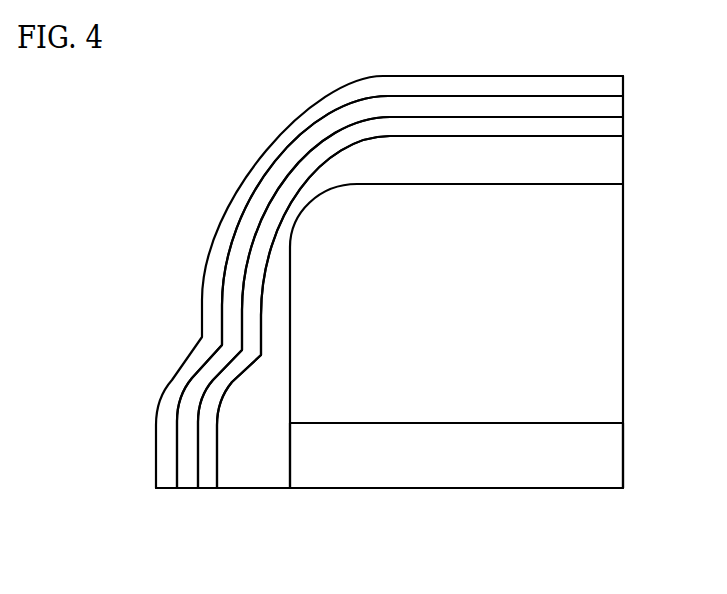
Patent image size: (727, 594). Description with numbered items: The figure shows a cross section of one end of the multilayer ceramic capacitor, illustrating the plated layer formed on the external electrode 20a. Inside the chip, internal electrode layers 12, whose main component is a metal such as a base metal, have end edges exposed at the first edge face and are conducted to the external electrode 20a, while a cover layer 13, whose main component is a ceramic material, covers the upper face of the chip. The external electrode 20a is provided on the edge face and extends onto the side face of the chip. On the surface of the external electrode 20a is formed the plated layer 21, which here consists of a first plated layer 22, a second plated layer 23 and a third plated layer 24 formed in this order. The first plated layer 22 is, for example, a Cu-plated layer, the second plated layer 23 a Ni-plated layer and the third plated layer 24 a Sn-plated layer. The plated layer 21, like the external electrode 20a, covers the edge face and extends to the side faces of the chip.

The internal electrode layer 12 is at (540, 423).
The cover layer 13 is at (577, 336).
The external electrode 20a is at (250, 458).
The plated layer 21 is at (368, 282).
The first plated layer 22 is at (275, 223).
The second plated layer 23 is at (272, 193).
The third plated layer 24 is at (268, 160).